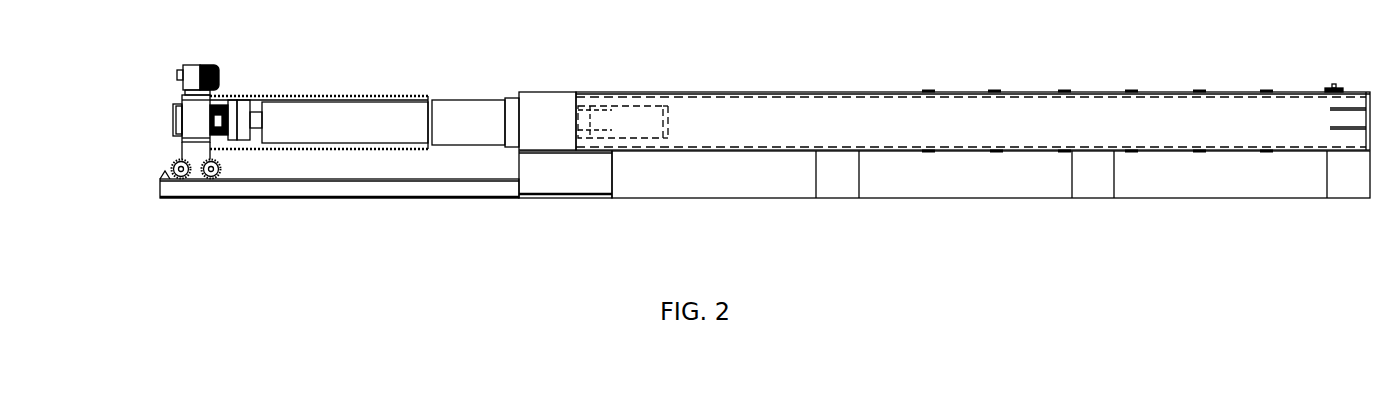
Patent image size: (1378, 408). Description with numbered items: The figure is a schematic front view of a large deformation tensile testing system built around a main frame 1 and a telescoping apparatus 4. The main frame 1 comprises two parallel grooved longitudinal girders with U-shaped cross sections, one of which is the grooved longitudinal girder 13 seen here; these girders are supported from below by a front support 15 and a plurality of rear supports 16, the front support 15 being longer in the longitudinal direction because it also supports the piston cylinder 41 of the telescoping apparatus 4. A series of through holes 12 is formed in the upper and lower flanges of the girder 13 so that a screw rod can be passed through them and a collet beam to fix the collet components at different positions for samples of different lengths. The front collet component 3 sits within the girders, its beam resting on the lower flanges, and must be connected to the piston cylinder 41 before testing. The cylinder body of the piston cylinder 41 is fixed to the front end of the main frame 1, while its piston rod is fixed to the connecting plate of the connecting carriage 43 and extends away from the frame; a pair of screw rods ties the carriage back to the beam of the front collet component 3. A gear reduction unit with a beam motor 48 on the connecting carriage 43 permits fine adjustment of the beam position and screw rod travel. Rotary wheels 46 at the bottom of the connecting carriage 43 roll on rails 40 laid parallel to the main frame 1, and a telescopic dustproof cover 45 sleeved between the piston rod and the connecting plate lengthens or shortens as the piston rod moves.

The main frame 1 is at (860, 87).
The front collet component 3 is at (628, 113).
The telescoping apparatus 4 is at (460, 83).
The through holes 12 is at (986, 92).
The grooved longitudinal girder 13 is at (727, 115).
The front support 15 is at (575, 178).
The rear supports 16 is at (842, 180).
The rails 40 is at (345, 190).
The piston cylinder 41 is at (370, 116).
The connecting carriage 43 is at (204, 108).
The telescopic dustproof cover 45 is at (318, 98).
The rotary wheels 46 is at (208, 177).
The beam motor 48 is at (204, 68).